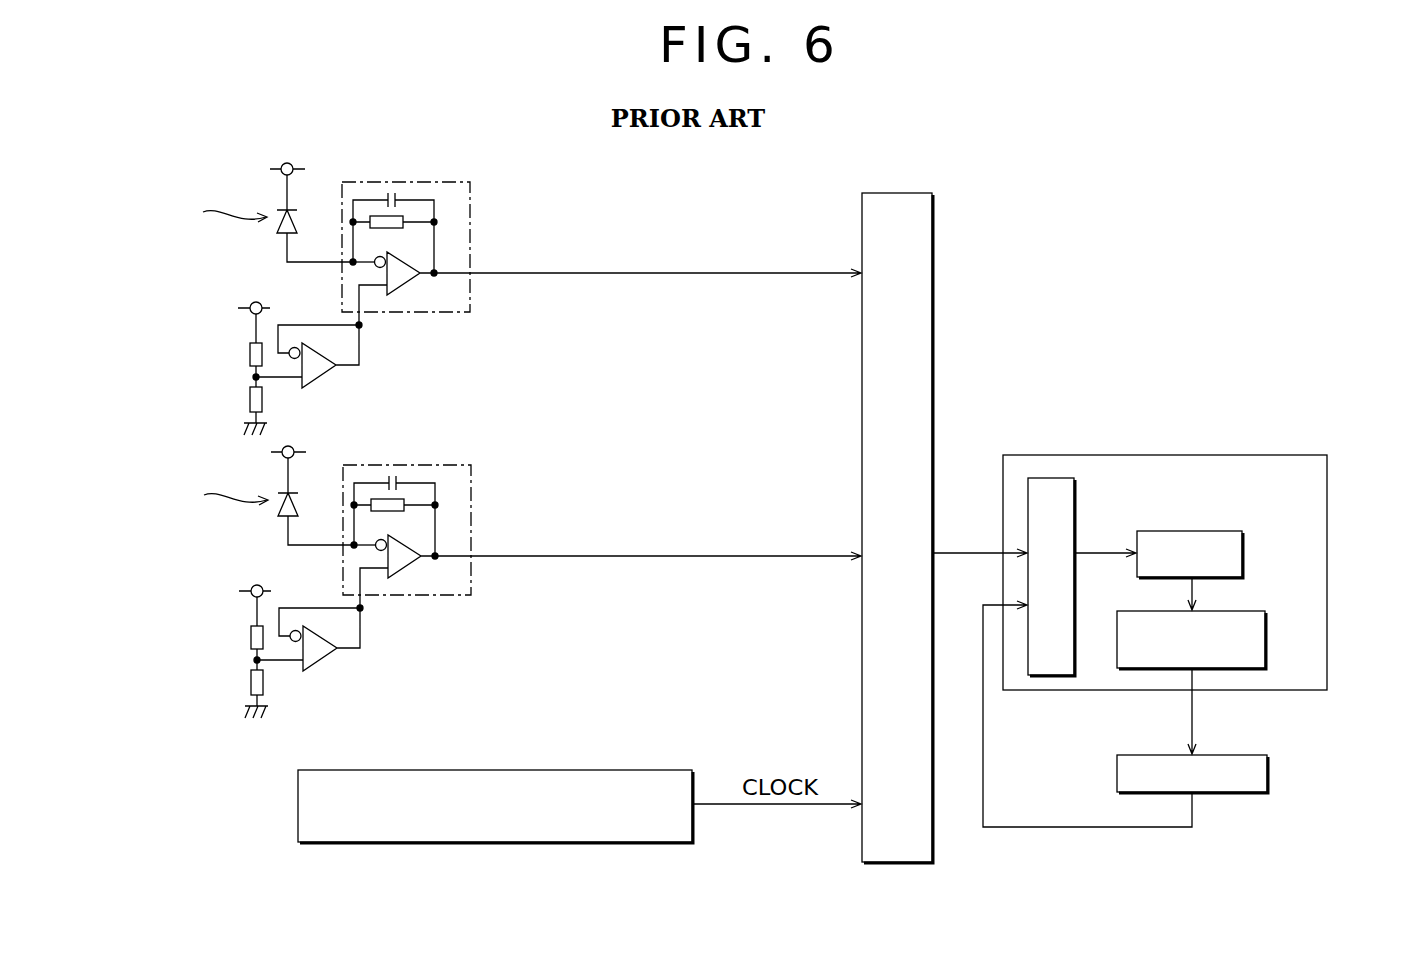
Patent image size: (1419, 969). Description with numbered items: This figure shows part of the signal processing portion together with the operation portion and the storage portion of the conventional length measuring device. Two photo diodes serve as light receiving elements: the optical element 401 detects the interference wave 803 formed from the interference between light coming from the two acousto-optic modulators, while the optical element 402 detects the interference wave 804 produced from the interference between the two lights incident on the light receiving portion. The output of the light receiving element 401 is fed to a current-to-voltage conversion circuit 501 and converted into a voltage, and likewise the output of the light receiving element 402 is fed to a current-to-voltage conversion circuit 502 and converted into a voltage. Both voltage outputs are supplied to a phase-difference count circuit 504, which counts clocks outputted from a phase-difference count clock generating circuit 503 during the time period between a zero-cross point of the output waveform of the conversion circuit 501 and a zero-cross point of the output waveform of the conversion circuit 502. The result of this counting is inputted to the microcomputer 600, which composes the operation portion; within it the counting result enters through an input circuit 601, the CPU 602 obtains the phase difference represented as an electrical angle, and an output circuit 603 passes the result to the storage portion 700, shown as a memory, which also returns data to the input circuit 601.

The optical element 401 is at (292, 212).
The optical element 402 is at (293, 495).
The current-to-voltage conversion circuit 501 is at (400, 182).
The current-to-voltage conversion circuit 502 is at (390, 464).
The phase-difference count clock generating circuit 503 is at (498, 770).
The phase-difference count circuit 504 is at (899, 193).
The microcomputer 600 is at (1327, 535).
The input circuit 601 is at (1075, 505).
The CPU 602 is at (1243, 551).
The output circuit 603 is at (1250, 610).
The storage portion 700 is at (1268, 773).
The interference wave 803 is at (212, 216).
The interference wave 804 is at (211, 506).